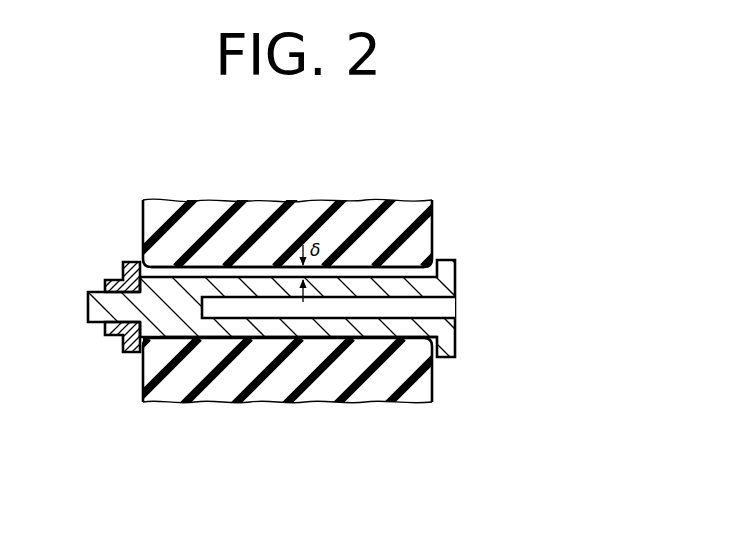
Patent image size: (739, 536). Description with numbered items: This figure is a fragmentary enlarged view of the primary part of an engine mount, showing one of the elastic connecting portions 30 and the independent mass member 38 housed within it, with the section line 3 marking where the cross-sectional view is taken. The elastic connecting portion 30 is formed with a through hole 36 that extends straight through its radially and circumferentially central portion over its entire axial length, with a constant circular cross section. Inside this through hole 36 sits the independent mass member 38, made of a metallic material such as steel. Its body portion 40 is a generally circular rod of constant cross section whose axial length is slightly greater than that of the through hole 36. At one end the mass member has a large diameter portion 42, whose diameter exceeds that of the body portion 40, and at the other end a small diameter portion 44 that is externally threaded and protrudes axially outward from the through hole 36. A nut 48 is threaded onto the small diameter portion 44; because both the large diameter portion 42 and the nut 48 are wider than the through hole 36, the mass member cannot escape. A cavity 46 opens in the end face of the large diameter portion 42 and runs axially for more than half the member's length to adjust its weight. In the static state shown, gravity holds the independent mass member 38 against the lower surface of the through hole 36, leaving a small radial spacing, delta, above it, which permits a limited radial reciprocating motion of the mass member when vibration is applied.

The section line 3- 3 is at (246, 155).
The elastic connecting portion 30 is at (424, 231).
The through hole 36 is at (180, 266).
The independent mass member 38 is at (317, 316).
The body portion 40 is at (377, 330).
The large diameter portion 42 is at (446, 335).
The small diameter portion 44 is at (96, 310).
The cavity 46 is at (431, 303).
The nut 48 is at (110, 279).